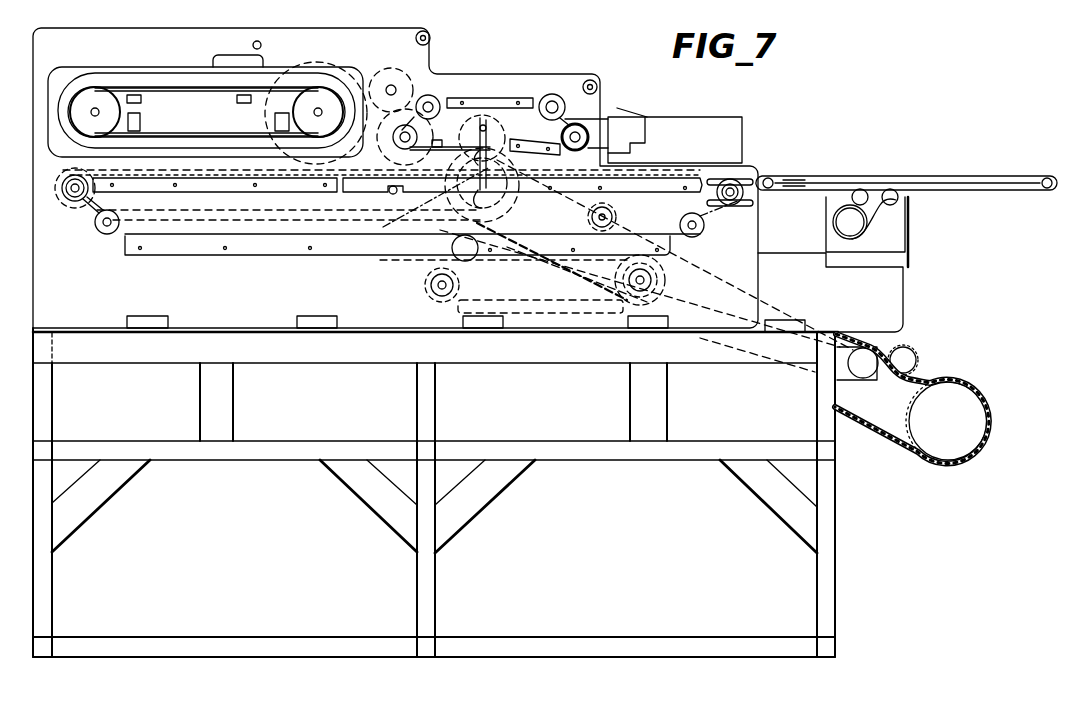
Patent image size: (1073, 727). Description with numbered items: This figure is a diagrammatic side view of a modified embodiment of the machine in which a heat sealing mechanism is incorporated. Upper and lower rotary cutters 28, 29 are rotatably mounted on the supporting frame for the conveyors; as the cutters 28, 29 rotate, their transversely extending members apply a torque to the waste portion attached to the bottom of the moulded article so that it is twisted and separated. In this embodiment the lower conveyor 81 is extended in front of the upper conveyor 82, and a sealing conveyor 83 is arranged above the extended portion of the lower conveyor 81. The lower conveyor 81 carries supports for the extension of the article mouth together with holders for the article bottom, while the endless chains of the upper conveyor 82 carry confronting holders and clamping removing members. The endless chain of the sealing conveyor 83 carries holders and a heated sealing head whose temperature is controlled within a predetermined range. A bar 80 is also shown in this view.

The sealing conveyor 83 is at (160, 74).
The guide bar 80 is at (448, 92).
The upper conveyor 82 is at (541, 96).
The lower conveyor 81 is at (113, 230).
The upper rotary cutter 28 is at (455, 178).
The lower rotary cutter 29 is at (470, 193).